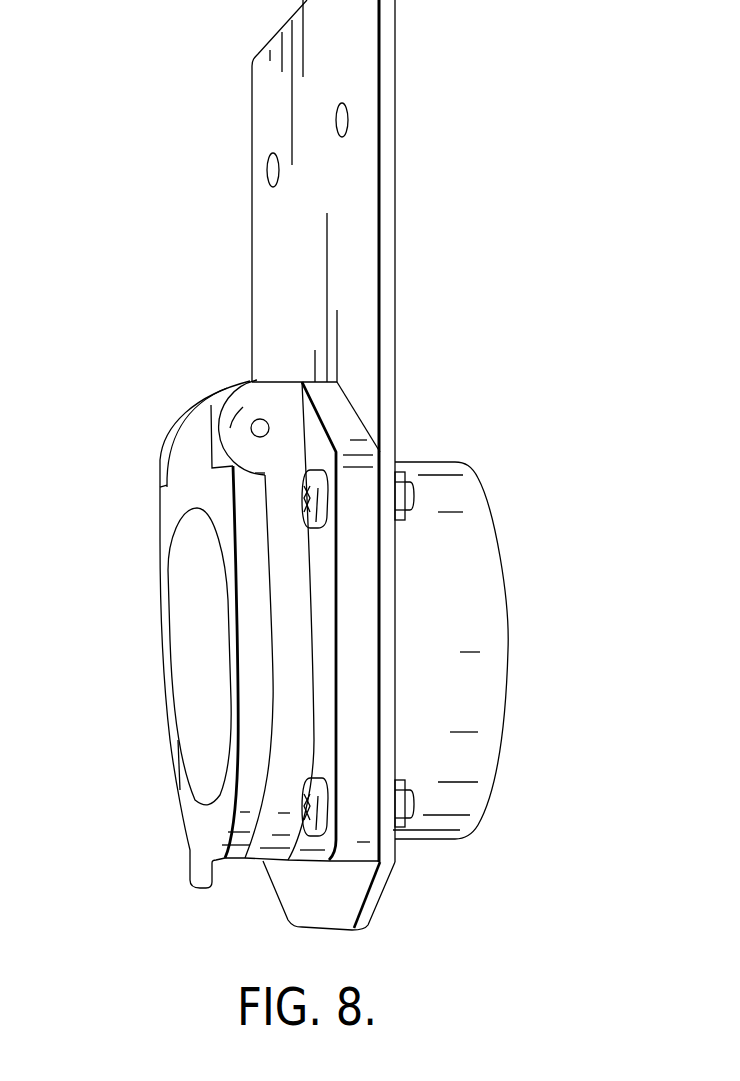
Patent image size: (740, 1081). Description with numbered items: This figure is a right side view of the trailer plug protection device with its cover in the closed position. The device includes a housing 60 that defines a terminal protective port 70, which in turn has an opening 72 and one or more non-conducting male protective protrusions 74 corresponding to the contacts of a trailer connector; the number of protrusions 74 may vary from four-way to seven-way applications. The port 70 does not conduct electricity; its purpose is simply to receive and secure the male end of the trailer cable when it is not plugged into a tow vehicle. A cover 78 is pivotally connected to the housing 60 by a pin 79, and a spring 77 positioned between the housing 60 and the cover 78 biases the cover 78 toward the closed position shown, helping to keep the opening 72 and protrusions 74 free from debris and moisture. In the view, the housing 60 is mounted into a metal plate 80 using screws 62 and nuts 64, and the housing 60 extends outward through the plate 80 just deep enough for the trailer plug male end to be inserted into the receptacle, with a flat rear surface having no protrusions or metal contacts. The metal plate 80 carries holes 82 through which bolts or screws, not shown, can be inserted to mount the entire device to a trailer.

The housing 60 is at (346, 603).
The screws 62 is at (315, 470).
The nuts 64 is at (417, 495).
The terminal protective port 70 is at (346, 603).
The opening 72 is at (311, 600).
The male protective protrusions 74 is at (493, 503).
The spring 77 is at (242, 410).
The cover 78 is at (177, 737).
The pin 79 is at (252, 432).
The metal plate 80 is at (367, 214).
The holes 82 is at (349, 118).